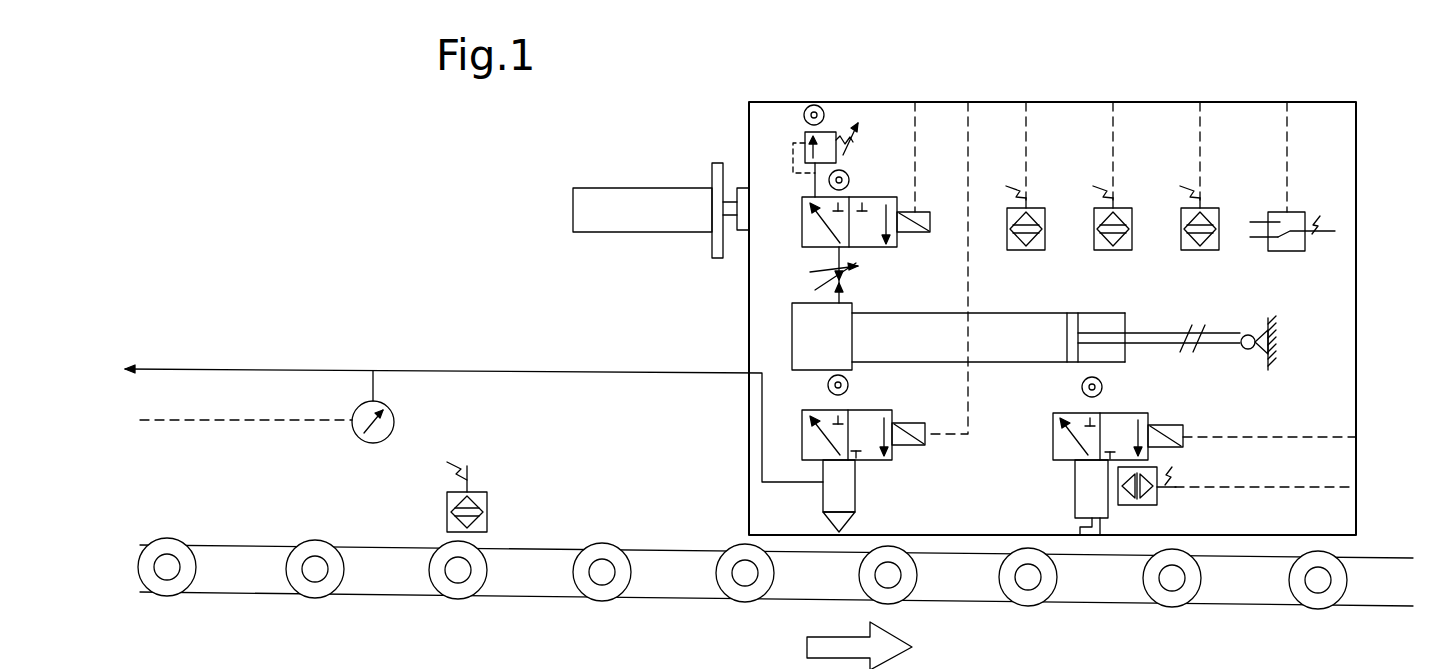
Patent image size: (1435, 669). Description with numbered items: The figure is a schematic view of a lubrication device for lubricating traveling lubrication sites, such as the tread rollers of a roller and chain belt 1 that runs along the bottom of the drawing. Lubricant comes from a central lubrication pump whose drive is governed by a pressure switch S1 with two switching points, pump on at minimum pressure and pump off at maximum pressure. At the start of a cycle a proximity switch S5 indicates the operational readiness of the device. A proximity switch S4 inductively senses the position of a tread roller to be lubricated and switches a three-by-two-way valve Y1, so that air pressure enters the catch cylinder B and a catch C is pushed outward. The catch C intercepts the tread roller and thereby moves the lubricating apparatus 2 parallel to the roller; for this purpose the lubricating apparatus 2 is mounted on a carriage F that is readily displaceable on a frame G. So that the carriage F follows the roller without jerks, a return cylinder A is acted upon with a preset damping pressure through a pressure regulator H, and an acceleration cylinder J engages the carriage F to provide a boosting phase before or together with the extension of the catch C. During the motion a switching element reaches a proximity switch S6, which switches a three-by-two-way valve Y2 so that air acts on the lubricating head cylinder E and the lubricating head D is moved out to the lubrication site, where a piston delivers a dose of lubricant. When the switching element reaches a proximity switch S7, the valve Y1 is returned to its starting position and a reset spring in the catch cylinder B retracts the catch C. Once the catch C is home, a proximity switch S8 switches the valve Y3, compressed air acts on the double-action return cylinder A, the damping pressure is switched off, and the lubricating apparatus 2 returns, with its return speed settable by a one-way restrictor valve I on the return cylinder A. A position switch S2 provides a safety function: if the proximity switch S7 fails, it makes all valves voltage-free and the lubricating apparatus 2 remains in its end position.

The roller and chain belt 1 is at (683, 614).
The lubricating apparatus 2 is at (659, 233).
The acceleration cylinder J is at (656, 233).
The pressure regulator H is at (805, 140).
The one-way restrictor valve I is at (826, 275).
The valve Y3 is at (866, 240).
The return cylinder A is at (1016, 336).
The frame G is at (1258, 354).
The carriage F is at (1052, 318).
The 3/2-way valve Y2 is at (867, 446).
The lubricating head cylinder E is at (851, 486).
The lubricating head D is at (853, 516).
The 3/2-way valve Y1 is at (1121, 428).
The catch cylinder B is at (1081, 489).
The catch C is at (1077, 520).
The proximity switch S8 is at (1154, 501).
The proximity switch S5 is at (1025, 237).
The proximity switch S6 is at (1112, 237).
The proximity switch S7 is at (1199, 237).
The position switch S2 is at (1292, 250).
The pressure switch S1 is at (394, 407).
The proximity switch S4 is at (446, 497).